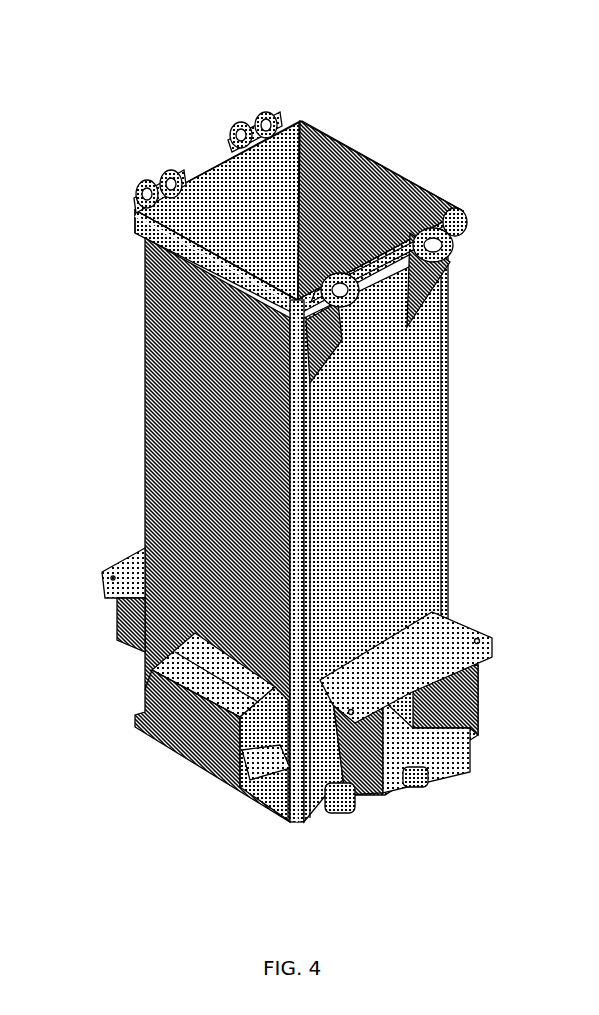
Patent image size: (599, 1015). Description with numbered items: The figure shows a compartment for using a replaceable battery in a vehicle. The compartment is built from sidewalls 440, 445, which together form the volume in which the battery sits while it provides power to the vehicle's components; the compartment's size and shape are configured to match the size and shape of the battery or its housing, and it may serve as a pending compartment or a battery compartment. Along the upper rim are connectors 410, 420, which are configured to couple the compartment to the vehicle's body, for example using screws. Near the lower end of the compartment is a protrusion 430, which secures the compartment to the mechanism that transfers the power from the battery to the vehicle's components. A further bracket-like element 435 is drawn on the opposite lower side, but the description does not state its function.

The connector 410 is at (258, 111).
The connector 420 is at (158, 173).
The protrusion 430 is at (460, 643).
The side bracket 435 is at (123, 571).
The sidewall 440 is at (175, 387).
The sidewall 445 is at (420, 420).